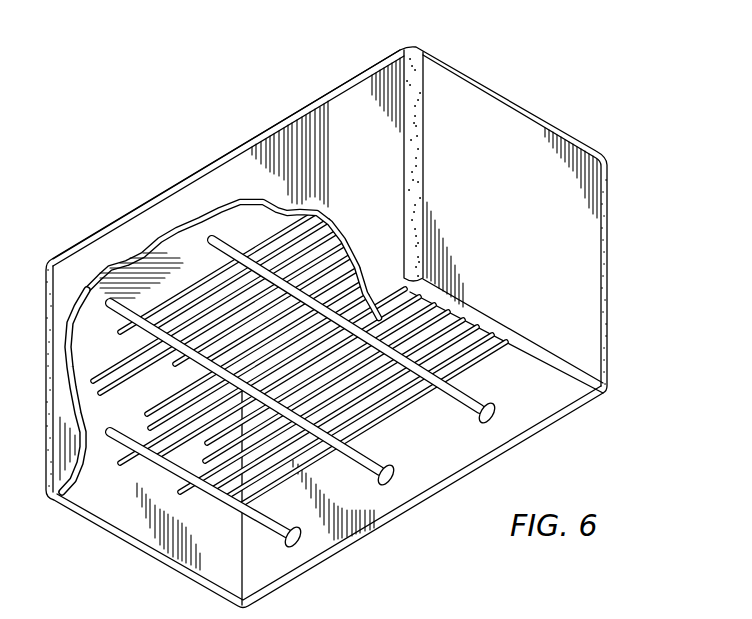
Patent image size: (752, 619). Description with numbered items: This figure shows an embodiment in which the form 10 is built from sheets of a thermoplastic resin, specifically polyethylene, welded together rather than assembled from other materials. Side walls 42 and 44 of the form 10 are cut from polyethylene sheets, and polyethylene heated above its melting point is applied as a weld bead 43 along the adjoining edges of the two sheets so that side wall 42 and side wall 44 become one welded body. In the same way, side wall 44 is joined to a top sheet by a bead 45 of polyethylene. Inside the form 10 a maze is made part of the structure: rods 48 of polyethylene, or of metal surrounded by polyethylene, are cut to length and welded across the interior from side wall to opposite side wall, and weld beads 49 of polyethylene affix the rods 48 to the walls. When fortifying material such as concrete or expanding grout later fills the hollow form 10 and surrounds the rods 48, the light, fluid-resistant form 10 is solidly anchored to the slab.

The form 10 is at (614, 72).
The side wall 42 is at (585, 206).
The weld bead 43 is at (413, 163).
The side wall 44 is at (337, 120).
The bead 45 is at (362, 68).
The rods 48 is at (372, 452).
The weld beads 49 is at (497, 410).